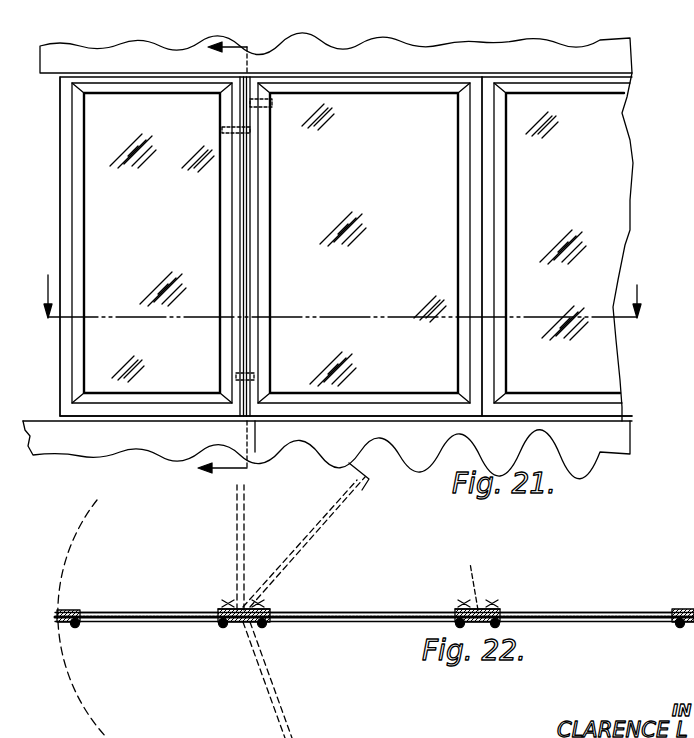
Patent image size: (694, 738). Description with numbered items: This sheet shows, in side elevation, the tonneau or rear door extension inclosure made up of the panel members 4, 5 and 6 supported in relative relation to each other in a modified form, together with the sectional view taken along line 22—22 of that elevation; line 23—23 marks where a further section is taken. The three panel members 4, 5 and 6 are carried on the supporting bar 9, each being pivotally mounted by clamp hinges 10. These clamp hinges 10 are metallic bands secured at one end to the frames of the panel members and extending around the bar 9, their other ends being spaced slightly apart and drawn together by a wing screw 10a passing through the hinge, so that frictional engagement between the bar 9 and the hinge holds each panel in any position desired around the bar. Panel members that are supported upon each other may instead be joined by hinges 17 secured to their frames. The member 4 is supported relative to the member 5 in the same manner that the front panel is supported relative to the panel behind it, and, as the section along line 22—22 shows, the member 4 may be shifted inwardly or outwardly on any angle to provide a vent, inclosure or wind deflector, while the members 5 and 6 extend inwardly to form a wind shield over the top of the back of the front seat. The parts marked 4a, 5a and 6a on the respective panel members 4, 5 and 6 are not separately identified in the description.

In FIG. 21, the panel member 4 is at (152, 243).
In FIG. 22, the panel member 4 is at (180, 592).
In FIG. 21, the panel member 5 is at (364, 243).
In FIG. 22, the panel member 5 is at (387, 592).
In FIG. 21, the panel member 6 is at (562, 243).
In FIG. 22, the panel member 6 is at (590, 600).
In FIG. 21, the left panel edge / jamb 4a is at (32, 246).
In FIG. 22, the left panel edge / jamb 4a is at (65, 612).
In FIG. 21, the middle panel lower rail 5a is at (352, 410).
In FIG. 21, the right panel edge / jamb 6a is at (607, 414).
In FIG. 22, the right panel edge / jamb 6a is at (681, 612).
In FIG. 21, the supporting bar 9 is at (248, 221).
In FIG. 22, the supporting bar 9 is at (240, 624).
In FIG. 21, the clamp hinge 10 is at (251, 134).
In FIG. 22, the clamp hinge 10 is at (263, 612).
In FIG. 22, the wing screw 10a is at (247, 607).
In FIG. 22, the hinges 17 is at (500, 610).
In FIG. 21, the section line 22— 22 is at (342, 296).
In FIG. 21, the section line 23— 23 is at (242, 264).